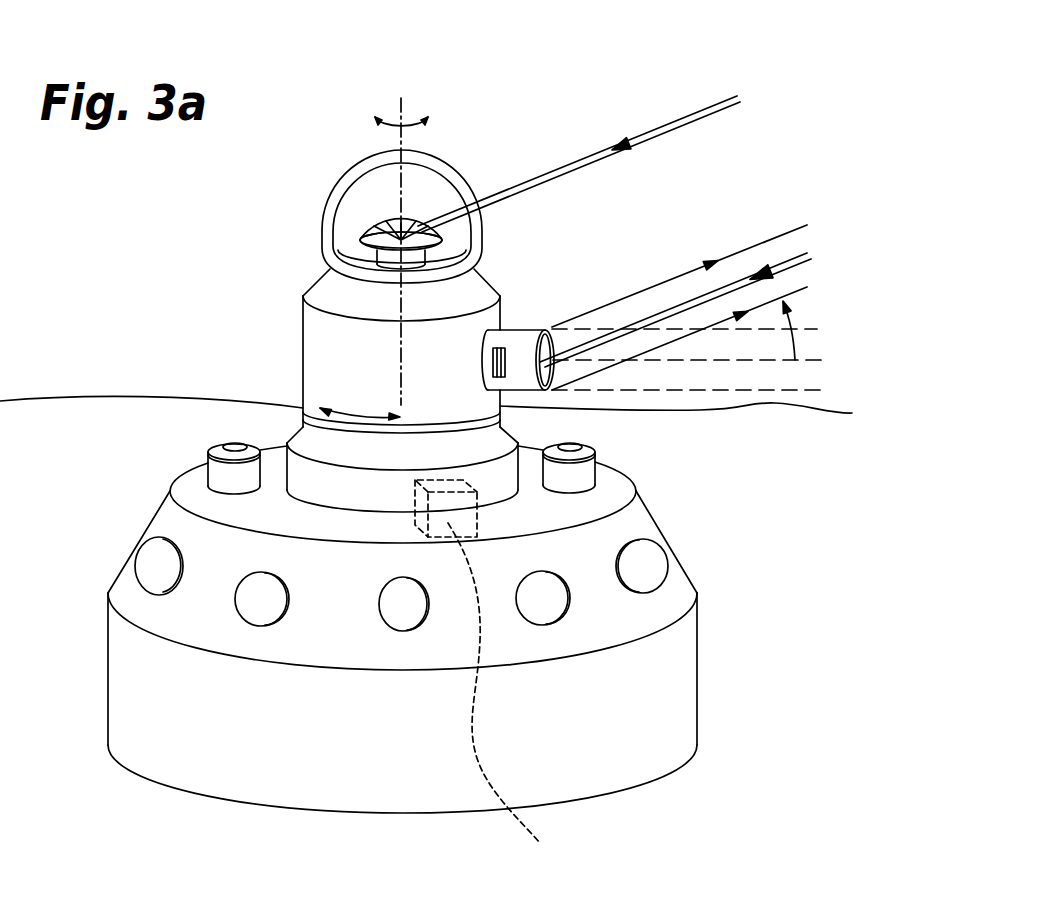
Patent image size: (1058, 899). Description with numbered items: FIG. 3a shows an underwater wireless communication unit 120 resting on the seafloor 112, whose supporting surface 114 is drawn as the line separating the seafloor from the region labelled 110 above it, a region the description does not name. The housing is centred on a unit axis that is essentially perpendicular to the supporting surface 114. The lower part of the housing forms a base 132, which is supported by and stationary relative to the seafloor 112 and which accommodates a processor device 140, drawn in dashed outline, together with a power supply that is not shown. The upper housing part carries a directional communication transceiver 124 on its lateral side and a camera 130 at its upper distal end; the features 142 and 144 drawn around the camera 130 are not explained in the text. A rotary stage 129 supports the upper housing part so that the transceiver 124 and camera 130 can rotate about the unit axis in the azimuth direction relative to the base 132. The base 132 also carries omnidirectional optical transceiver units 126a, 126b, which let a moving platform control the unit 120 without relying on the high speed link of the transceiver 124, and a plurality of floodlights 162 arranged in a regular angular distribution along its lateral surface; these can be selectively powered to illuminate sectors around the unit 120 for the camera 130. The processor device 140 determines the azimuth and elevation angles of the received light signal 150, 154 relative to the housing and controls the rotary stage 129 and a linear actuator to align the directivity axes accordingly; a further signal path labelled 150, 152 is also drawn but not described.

The first medium (air) 110 is at (89, 297).
The seafloor 112 is at (81, 460).
The supporting surface 114 is at (123, 413).
The communication unit 120 is at (494, 105).
The directional communication transceiver 124 is at (502, 348).
The omnidirectional optical transceiver unit 126a is at (237, 467).
The omnidirectional optical transceiver unit 126b is at (578, 473).
The rotary stage 129 is at (320, 418).
The camera 130 is at (443, 240).
The base 132 is at (672, 705).
The processor device 140 is at (528, 828).
The protective ring 142 is at (362, 177).
The lens rim 144 is at (383, 238).
The received light signal 150 is at (621, 233).
The measurement beam 152 is at (767, 270).
The received light signal 154 is at (640, 138).
The floodlights 162 is at (647, 563).